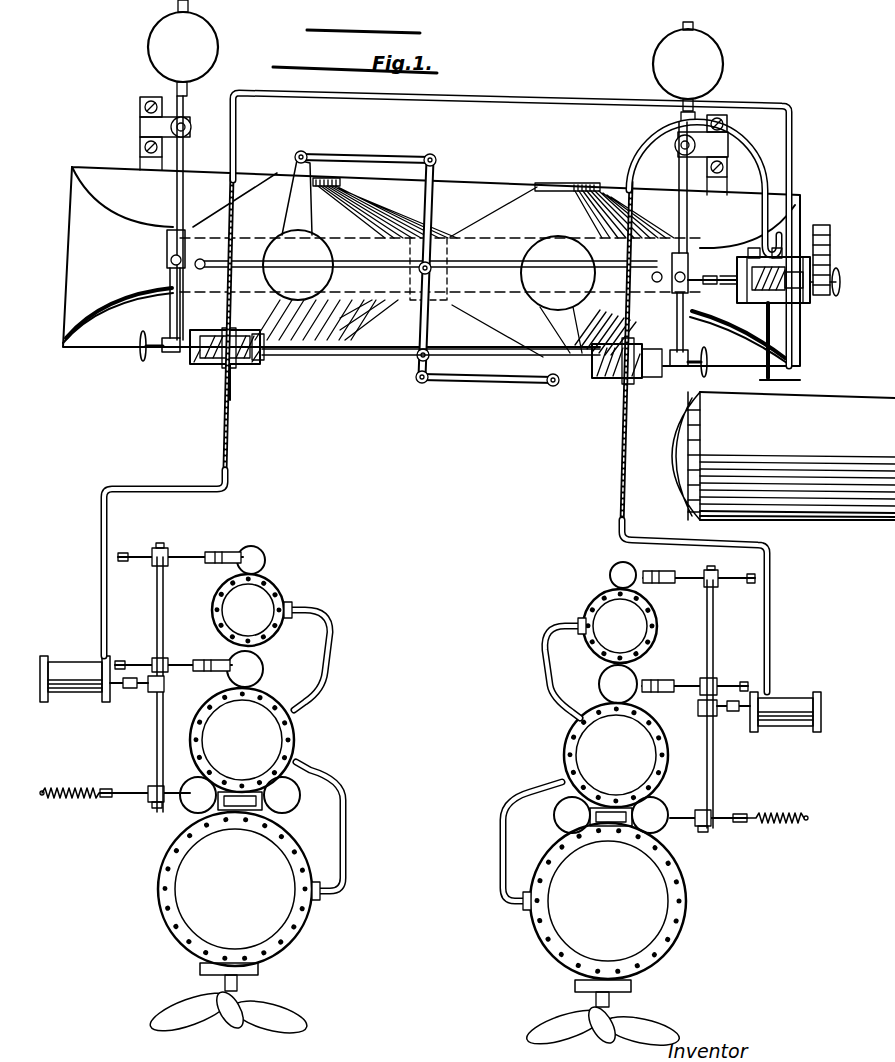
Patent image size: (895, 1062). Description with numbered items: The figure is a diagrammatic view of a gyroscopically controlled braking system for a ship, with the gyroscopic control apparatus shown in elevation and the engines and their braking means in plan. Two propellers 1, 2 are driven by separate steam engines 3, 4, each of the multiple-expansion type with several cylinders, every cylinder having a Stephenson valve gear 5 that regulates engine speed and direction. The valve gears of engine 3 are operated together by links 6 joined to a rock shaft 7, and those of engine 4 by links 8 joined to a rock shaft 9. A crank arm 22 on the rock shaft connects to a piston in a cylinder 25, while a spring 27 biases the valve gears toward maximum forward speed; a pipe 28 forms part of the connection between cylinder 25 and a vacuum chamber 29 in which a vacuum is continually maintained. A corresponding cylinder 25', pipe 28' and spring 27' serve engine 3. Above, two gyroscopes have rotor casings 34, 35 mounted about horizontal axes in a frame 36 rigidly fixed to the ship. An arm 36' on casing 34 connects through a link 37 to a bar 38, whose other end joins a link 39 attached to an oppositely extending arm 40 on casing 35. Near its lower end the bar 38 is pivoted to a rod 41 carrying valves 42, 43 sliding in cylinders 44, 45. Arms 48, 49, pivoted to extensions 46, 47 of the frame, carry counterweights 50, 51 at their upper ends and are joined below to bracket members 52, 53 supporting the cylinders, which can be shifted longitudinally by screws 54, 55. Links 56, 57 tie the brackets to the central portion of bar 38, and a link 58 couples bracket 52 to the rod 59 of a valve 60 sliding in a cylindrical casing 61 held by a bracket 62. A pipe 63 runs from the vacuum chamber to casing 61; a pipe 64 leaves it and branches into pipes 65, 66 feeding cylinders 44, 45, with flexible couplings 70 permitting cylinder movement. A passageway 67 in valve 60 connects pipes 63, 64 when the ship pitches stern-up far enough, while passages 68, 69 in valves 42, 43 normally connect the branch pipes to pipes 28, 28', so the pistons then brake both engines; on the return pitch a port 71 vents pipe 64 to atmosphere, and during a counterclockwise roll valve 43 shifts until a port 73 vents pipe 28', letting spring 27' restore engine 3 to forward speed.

The propeller 1 is at (272, 1010).
The propeller 2 is at (648, 1024).
The steam engine 3 is at (266, 737).
The steam engine 4 is at (585, 749).
The Stephenson valve gear 5 is at (224, 560).
The links 6 is at (128, 794).
The rock shaft 7 is at (164, 606).
The links 8 is at (730, 578).
The rock shaft 9 is at (714, 628).
The crank arm 22 is at (136, 690).
The cylinder 25 is at (785, 698).
The cylinder 25' is at (75, 666).
The spring 27 is at (777, 834).
The spring 27' is at (74, 809).
The pipe 28 is at (712, 606).
The pipe 28' is at (143, 563).
The vacuum chamber 29 is at (783, 456).
The rotor casing 34 is at (388, 212).
The rotor casing 35 is at (562, 210).
The frame 36 is at (431, 266).
The arm 36' is at (297, 197).
The link 37 is at (364, 158).
The bar 38 is at (434, 194).
The link 39 is at (468, 386).
The arm 40 is at (545, 335).
The rod 41 is at (368, 358).
The valve 42 is at (652, 380).
The valve 43 is at (205, 362).
The cylinder 44 is at (592, 378).
The cylinder 45 is at (258, 364).
The extension 46 is at (140, 143).
The extension 47 is at (728, 128).
The arm 48 is at (184, 153).
The arm 49 is at (679, 176).
The counterweight 50 is at (183, 48).
The counterweight 51 is at (688, 72).
The bracket member 52 is at (690, 274).
The bracket member 53 is at (166, 262).
The screw 54 is at (696, 358).
The screw 55 is at (152, 360).
The link 56 is at (494, 280).
The link 57 is at (346, 274).
The link 58 is at (710, 284).
The rod 59 is at (732, 290).
The valve 60 is at (795, 300).
The cylindrical casing 61 is at (814, 260).
The bracket 62 is at (820, 236).
The pipe 63 is at (776, 380).
The pipe 64 is at (760, 245).
The pipe 65 is at (640, 160).
The pipe 66 is at (240, 100).
The passageway 67 is at (766, 308).
The passage 68 is at (636, 346).
The passage 69 is at (224, 332).
The flexible coupling 70 is at (234, 215).
The port 71 is at (787, 245).
The port 73 is at (238, 366).